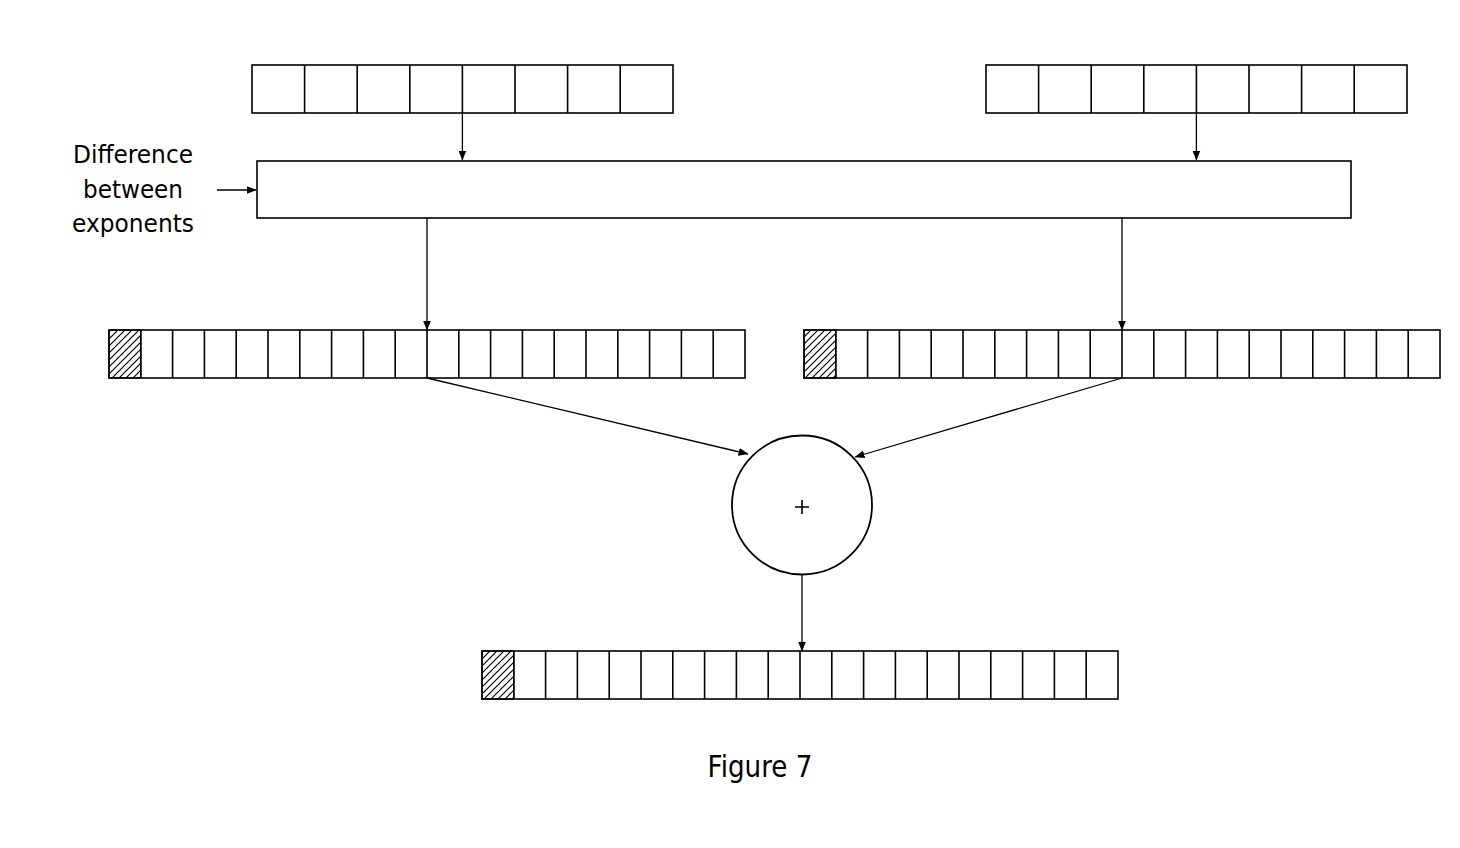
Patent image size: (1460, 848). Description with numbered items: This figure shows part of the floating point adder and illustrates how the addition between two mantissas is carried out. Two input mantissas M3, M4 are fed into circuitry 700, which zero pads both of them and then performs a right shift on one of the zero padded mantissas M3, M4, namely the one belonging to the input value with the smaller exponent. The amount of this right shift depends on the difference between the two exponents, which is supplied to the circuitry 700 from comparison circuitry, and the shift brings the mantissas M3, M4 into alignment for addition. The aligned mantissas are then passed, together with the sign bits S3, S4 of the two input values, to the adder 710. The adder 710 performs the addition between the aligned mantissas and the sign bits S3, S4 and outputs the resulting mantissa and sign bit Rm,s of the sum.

The circuitry for zero padding 700 is at (1352, 190).
The adder 710 is at (872, 505).
The input mantissa M3 is at (462, 65).
The input mantissa M4 is at (1196, 65).
The sign bit S3 is at (122, 380).
The sign bit S4 is at (820, 330).
The resulting mantissa and sign bit Rm,s is at (1118, 674).